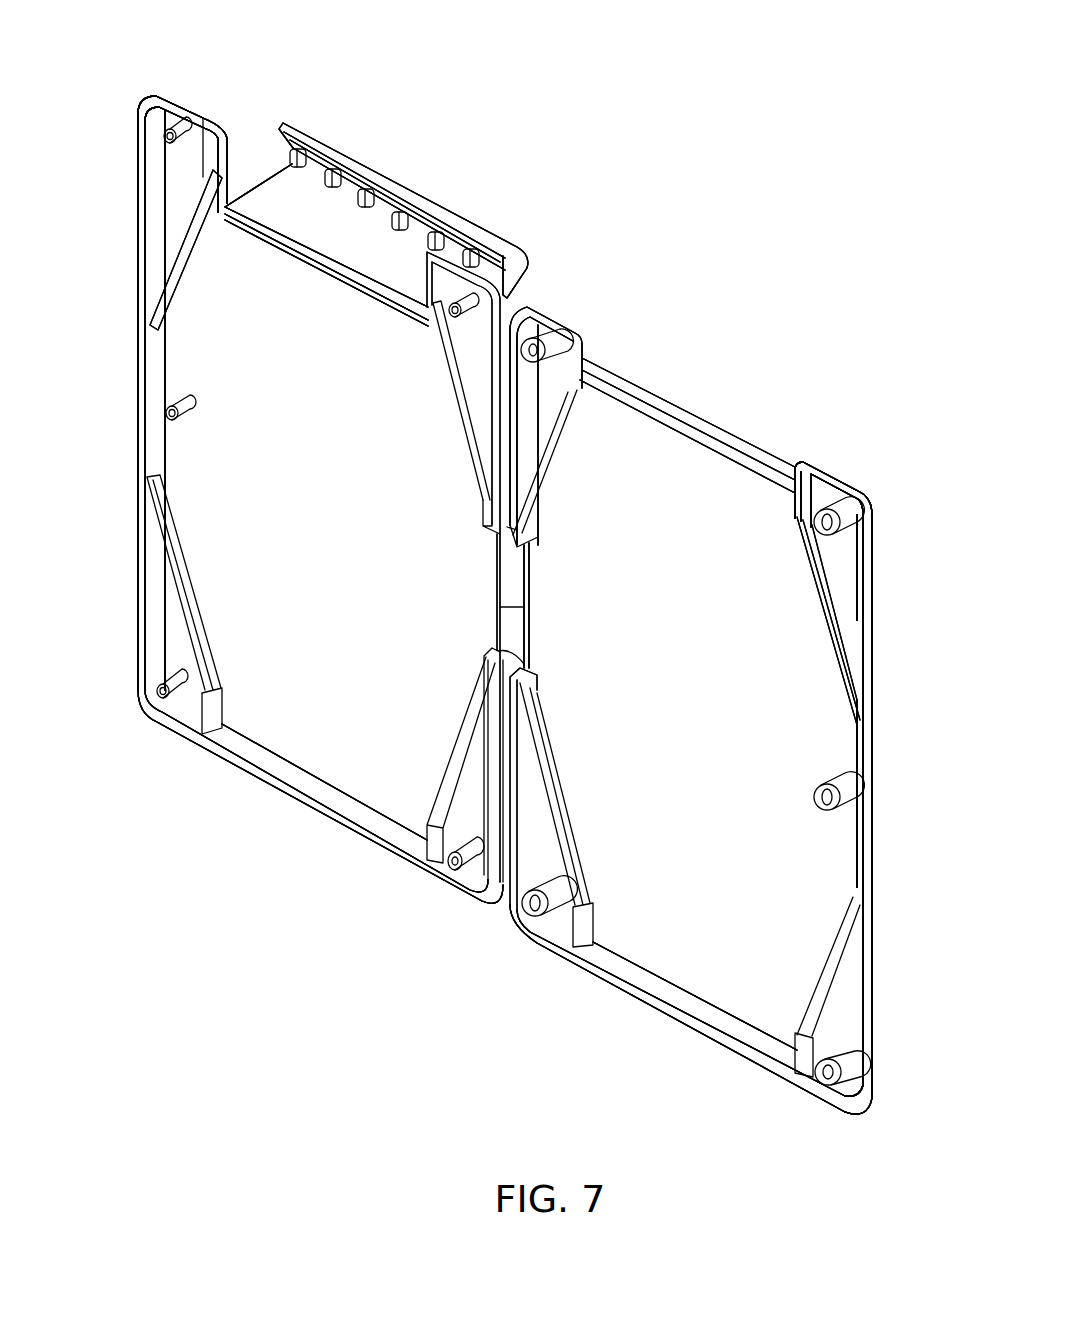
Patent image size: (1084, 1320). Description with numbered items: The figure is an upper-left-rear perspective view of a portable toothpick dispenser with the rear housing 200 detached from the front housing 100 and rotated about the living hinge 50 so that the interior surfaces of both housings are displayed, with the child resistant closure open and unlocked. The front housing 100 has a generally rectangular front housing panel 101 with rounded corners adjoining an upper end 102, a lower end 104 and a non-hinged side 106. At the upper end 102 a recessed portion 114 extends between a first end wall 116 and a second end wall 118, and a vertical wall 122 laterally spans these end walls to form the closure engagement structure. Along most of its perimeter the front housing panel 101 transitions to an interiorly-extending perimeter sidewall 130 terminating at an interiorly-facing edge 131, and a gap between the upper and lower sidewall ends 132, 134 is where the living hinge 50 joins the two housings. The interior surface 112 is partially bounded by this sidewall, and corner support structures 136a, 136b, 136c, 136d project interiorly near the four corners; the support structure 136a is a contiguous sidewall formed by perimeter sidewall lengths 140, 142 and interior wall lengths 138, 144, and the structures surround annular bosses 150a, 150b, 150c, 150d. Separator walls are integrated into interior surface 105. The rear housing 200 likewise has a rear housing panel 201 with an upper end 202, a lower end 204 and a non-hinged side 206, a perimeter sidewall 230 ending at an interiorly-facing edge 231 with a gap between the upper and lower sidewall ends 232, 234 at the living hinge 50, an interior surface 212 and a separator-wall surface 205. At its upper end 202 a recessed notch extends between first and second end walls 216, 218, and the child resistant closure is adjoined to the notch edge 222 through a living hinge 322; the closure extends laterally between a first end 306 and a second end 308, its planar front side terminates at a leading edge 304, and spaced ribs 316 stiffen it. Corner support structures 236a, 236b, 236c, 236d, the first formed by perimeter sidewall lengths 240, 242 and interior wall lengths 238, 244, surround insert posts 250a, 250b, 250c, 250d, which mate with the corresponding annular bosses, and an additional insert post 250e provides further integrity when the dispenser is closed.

The living hinge 50 is at (502, 603).
The front housing 100 is at (530, 1048).
The front housing panel 101 is at (667, 938).
The upper end 102 is at (553, 318).
The lower end 104 is at (668, 1012).
The interior surface 105 is at (653, 982).
The non-hinged side 106 is at (867, 710).
The interior surface 112 is at (667, 751).
The recessed portion 114 is at (650, 373).
The first end wall 116 is at (790, 466).
The second end wall 118 is at (585, 346).
The vertical wall 122 is at (678, 410).
The perimeter sidewall 130 is at (867, 837).
The interiorly-facing edge 131 is at (863, 760).
The upper sidewall end 132 is at (527, 550).
The lower sidewall end 134 is at (528, 661).
The corner support structure 136a is at (800, 563).
The corner support structure 136b is at (563, 460).
The corner support structure 136c is at (813, 977).
The corner support structure 136d is at (577, 820).
The interior corner support structure wall length 138 is at (822, 606).
The perimeter sidewall length 140 is at (868, 585).
The perimeter sidewall length 142 is at (838, 509).
The interior corner support structure wall length 144 is at (800, 500).
The annular boss 150a is at (843, 480).
The annular boss 150b is at (550, 350).
The annular boss 150c is at (837, 778).
The annular boss 150d is at (553, 893).
The rear housing 200 is at (220, 880).
The rear housing panel 201 is at (293, 735).
The upper end 202 is at (172, 100).
The lower end 204 is at (327, 827).
The interior surface 205 is at (310, 783).
The non-hinged side 206 is at (137, 392).
The interior surface 212 is at (297, 543).
The first end wall 216 is at (258, 212).
The second end wall 218 is at (427, 288).
The edge 222 is at (348, 283).
The perimeter sidewall 230 is at (140, 463).
The interiorly-facing edge 231 is at (142, 560).
The upper sidewall end 232 is at (490, 533).
The lower sidewall end 234 is at (492, 648).
The corner support structure 236a is at (190, 263).
The corner support structure 236b is at (440, 403).
The corner support structure 236c is at (185, 603).
The corner support structure 236d is at (437, 770).
The interior corner support structure wall length 238 is at (172, 275).
The perimeter sidewall length 240 is at (140, 210).
The perimeter sidewall length 242 is at (160, 107).
The interior corner support structure wall length 244 is at (203, 152).
The insert post 250a is at (178, 125).
The insert post 250b is at (442, 303).
The insert post 250c is at (182, 702).
The insert post 250d is at (468, 868).
The insert post 250e is at (188, 404).
The leading edge 304 is at (350, 165).
The first end 306 is at (258, 190).
The second end 308 is at (518, 273).
The spaced ribs 316 is at (433, 227).
The living hinge 322 is at (322, 251).